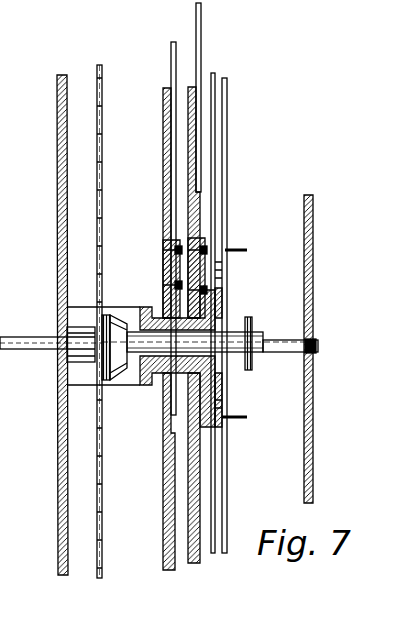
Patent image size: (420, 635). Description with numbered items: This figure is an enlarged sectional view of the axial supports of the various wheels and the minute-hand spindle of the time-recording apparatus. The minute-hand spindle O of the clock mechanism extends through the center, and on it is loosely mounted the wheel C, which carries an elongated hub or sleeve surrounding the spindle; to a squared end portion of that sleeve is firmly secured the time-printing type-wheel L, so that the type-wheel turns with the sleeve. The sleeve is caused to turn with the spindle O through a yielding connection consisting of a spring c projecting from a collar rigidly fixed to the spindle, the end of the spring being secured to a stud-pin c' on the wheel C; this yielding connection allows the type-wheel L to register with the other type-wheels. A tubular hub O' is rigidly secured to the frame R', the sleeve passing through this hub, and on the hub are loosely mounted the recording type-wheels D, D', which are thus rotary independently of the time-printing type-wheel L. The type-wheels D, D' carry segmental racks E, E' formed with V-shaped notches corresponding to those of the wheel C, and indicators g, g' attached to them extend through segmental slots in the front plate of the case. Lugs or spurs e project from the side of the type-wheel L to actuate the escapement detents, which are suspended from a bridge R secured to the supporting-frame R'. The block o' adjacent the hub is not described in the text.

The frame R' is at (49, 325).
The bridge R is at (317, 349).
The wheel C is at (97, 432).
The spring c is at (84, 335).
The stud-pin c' is at (210, 347).
The minute-hand spindle O is at (33, 334).
The tubular hub O' is at (103, 347).
The hub block o' is at (171, 356).
The segmental rack E is at (161, 272).
The segmental rack E' is at (190, 262).
The lugs or spurs e is at (241, 328).
The indicator g is at (159, 228).
The indicator g' is at (206, 97).
The recording type-wheel D is at (167, 344).
The recording type-wheel D' is at (196, 343).
The time-printing type-wheel L is at (225, 555).